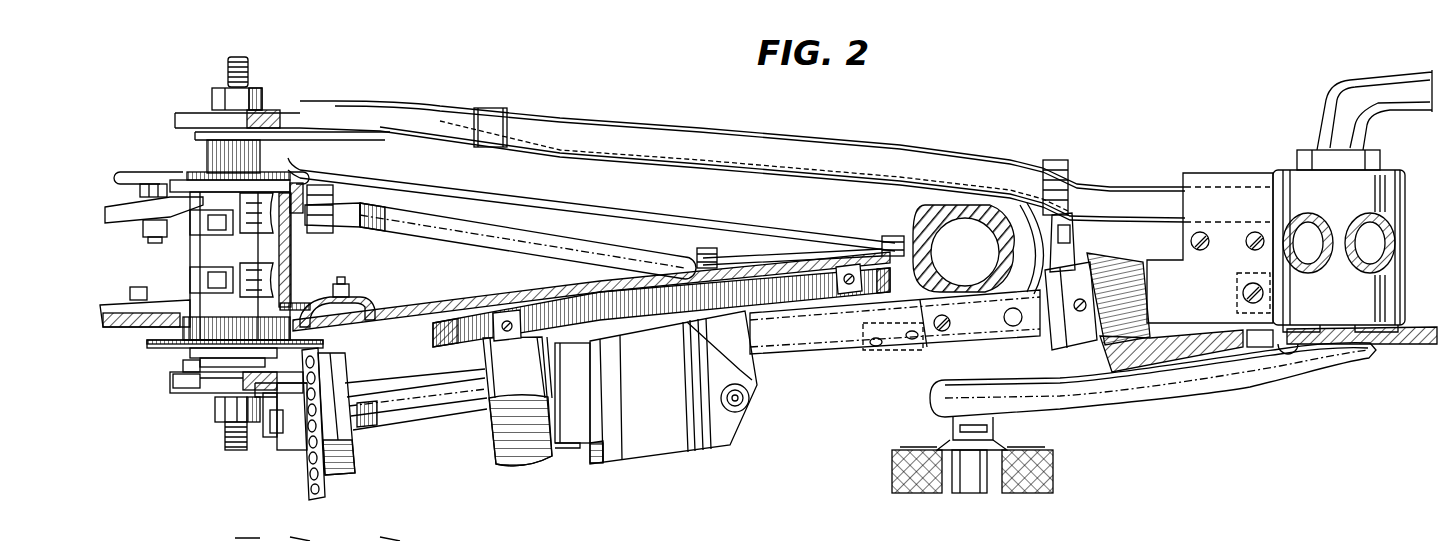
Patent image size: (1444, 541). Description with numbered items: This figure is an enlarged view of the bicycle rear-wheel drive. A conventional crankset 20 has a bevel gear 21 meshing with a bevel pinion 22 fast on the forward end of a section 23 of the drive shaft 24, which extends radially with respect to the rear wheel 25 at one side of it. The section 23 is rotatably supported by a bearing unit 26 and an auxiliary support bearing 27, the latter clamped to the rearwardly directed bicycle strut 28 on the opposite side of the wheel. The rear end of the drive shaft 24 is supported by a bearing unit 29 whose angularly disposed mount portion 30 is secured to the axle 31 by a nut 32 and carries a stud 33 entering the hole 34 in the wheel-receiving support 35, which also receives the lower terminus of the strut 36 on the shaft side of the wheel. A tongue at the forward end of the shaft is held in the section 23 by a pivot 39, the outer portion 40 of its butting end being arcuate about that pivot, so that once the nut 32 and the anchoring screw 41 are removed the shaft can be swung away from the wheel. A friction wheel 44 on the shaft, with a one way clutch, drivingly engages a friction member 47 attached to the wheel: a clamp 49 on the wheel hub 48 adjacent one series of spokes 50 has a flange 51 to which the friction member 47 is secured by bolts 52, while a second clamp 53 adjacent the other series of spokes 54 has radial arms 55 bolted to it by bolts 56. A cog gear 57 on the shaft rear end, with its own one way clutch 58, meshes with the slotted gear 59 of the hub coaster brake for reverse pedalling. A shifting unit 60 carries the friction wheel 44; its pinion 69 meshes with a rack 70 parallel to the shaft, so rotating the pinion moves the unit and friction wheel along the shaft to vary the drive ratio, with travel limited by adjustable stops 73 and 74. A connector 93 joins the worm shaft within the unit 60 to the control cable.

The crankset 20 is at (1306, 390).
The bevel gear 21 is at (1200, 358).
The bevel pinion 22 is at (1125, 253).
The section of drive shaft 23 is at (975, 340).
The drive shaft 24 is at (426, 418).
The rear wheel 25 is at (948, 205).
The bearing unit 26 is at (1163, 262).
The auxiliary support bearing 27 is at (1052, 345).
The bicycle strut 28 is at (1107, 182).
The bearing unit 29 is at (295, 450).
The mount portion 30 is at (175, 393).
The axle 31 is at (225, 445).
The nut 32 is at (218, 418).
The stud 33 is at (190, 394).
The hole 34 is at (243, 374).
The wheel-receiving support 35 is at (175, 378).
The strut 36 is at (265, 400).
The pivot 39 is at (1010, 328).
The outer portion 40 is at (1036, 340).
The anchoring screw 41 is at (940, 335).
The friction wheel 44 is at (532, 465).
The friction member 47 is at (450, 302).
The wheel hub 48 is at (200, 233).
The clamp 49 is at (195, 280).
The spokes 50 is at (410, 305).
The flange 51 is at (365, 297).
The bolts 52 is at (345, 284).
The second clamp 53 is at (193, 215).
The spokes 54 is at (430, 170).
The radial arms 55 is at (530, 238).
The bolts 56 is at (718, 245).
The cog gear 57 is at (316, 494).
The one way clutch 58 is at (362, 465).
The slotted gear 59 is at (150, 343).
The shifting unit 60 is at (703, 454).
The pinion 69 is at (752, 380).
The rack 70 is at (848, 294).
The stop 73 is at (815, 262).
The stop 74 is at (508, 310).
The connector 93 is at (752, 403).